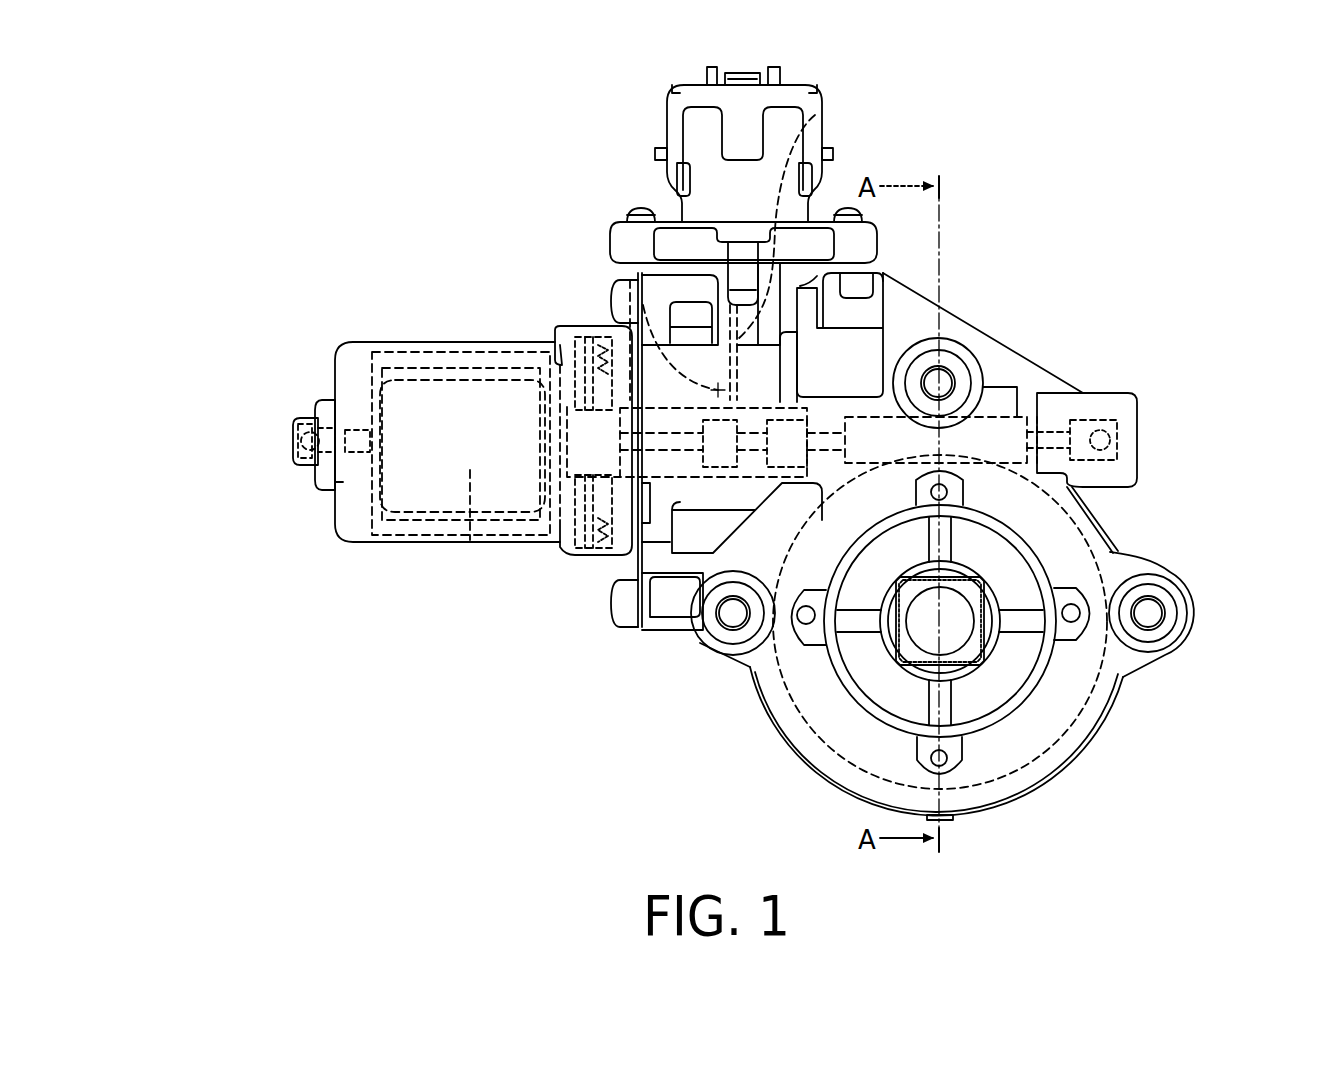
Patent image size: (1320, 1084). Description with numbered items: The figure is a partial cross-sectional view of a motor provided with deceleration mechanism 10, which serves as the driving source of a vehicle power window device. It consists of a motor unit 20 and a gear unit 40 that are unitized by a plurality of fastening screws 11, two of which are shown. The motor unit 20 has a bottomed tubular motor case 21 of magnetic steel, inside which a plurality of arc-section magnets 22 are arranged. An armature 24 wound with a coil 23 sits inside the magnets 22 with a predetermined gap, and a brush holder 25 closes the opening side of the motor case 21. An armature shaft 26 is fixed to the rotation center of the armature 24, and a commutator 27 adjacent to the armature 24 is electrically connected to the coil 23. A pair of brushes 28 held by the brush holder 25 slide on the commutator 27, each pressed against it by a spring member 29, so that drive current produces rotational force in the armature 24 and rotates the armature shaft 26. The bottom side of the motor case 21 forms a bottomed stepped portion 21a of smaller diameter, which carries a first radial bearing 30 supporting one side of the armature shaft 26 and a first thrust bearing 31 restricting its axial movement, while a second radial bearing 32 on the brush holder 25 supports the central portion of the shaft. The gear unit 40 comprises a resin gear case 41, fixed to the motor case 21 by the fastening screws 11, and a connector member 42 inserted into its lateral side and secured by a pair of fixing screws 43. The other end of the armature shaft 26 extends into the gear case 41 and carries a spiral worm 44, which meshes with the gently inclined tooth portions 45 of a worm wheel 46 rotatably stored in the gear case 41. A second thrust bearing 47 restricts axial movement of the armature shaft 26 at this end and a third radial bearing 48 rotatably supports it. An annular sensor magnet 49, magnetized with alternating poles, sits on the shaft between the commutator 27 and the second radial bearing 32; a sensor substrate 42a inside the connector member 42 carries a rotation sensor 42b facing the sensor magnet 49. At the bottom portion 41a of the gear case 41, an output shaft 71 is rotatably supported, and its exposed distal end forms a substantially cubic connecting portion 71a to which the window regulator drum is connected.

The motor provided with deceleration mechanism 10 is at (430, 668).
The fastening screw 11 is at (618, 301).
The motor unit 20 is at (343, 340).
The motor case 21 is at (352, 512).
The bottomed stepped portion 21a is at (340, 474).
The magnet 22 is at (418, 352).
The coil 23 is at (565, 543).
The armature 24 is at (470, 540).
The brush holder 25 is at (640, 340).
The armature shaft 26 is at (362, 435).
The commutator 27 is at (612, 457).
The brush 28 is at (553, 350).
The spring member 29 is at (600, 330).
The first radial bearing 30 is at (318, 402).
The first thrust bearing 31 is at (292, 445).
The second radial bearing 32 is at (800, 393).
The gear unit 40 is at (1042, 375).
The gear case 41 is at (995, 380).
The bottom portion 41a is at (825, 700).
The connector member 42 is at (742, 208).
The sensor substrate 42a is at (824, 117).
The rotation sensor 42b is at (633, 280).
The fixing screw 43 is at (640, 210).
The worm 44 is at (1012, 457).
The tooth portions 45 is at (1075, 740).
The worm wheel 46 is at (1050, 777).
The second thrust bearing 47 is at (1117, 437).
The third radial bearing 48 is at (1090, 410).
The sensor magnet 49 is at (722, 478).
The output shaft 71 is at (910, 668).
The connecting portion 71a is at (970, 595).